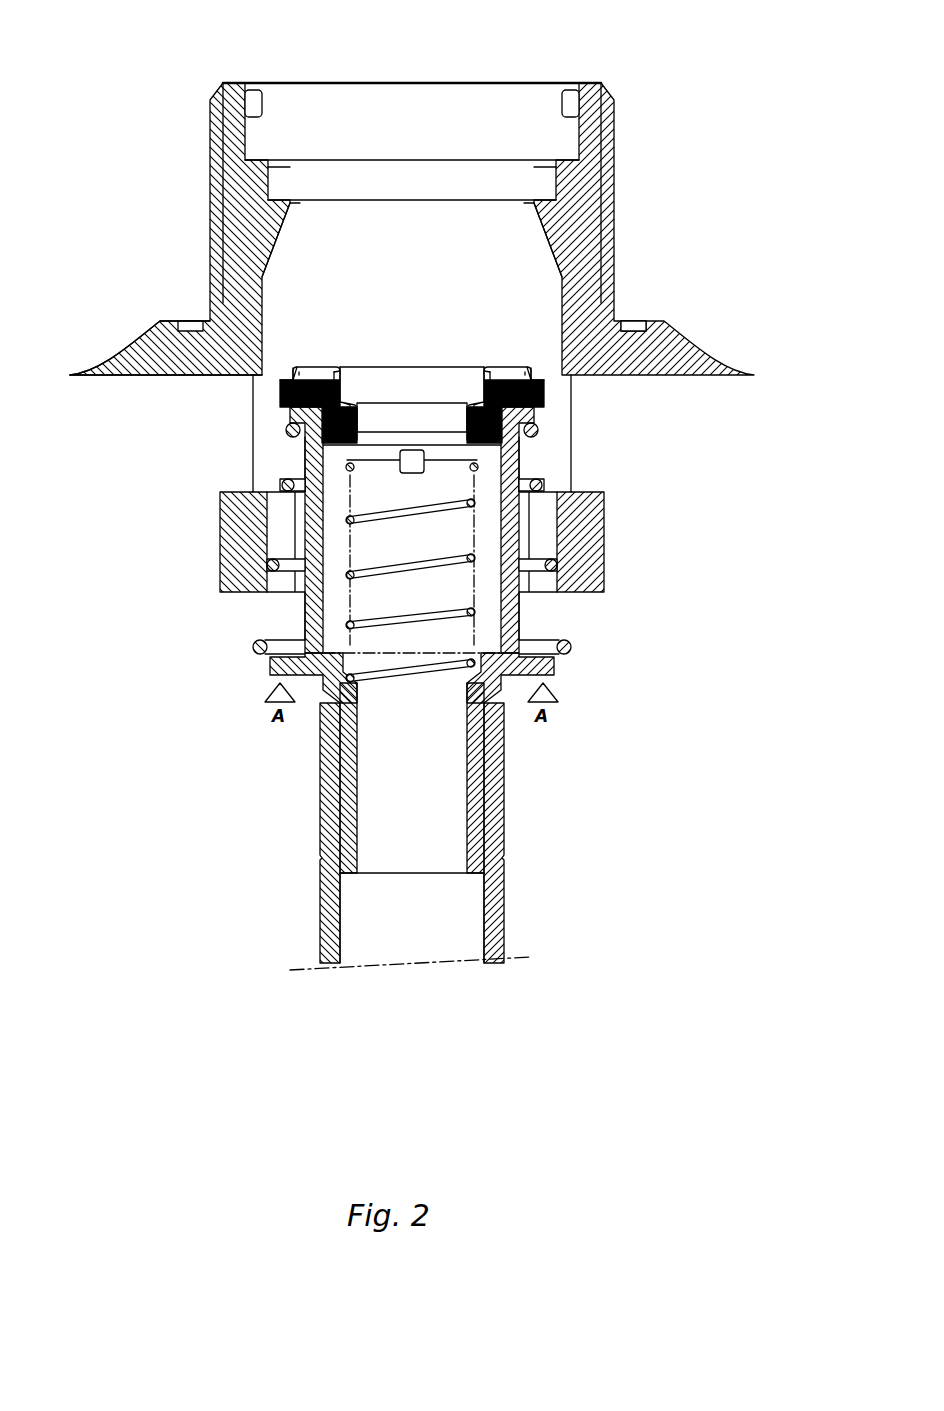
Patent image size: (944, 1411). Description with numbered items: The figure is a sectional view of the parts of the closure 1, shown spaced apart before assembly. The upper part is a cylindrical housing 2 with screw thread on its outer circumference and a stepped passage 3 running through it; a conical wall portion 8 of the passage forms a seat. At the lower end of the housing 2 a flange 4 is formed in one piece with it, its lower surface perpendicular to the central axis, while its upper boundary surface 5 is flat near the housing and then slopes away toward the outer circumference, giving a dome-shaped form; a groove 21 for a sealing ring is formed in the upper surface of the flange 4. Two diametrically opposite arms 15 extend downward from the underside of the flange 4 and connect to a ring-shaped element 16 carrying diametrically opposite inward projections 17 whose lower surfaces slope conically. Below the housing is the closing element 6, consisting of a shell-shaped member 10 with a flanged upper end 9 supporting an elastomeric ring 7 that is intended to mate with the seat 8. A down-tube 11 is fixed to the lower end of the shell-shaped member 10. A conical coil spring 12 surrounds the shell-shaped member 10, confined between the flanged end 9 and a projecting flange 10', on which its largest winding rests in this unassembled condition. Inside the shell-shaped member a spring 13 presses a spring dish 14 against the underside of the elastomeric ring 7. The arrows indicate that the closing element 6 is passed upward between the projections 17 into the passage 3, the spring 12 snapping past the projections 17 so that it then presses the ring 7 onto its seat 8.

The closure 1 is at (150, 848).
The cylindrical housing 2 is at (617, 155).
The stepped passage 3 is at (350, 100).
The flange 4 is at (120, 380).
The upper boundary surface 5 is at (138, 333).
The closing element 6 is at (522, 622).
The elastomeric ring 7 is at (545, 395).
The conical wall portion 8 is at (290, 207).
The flanged upper end 9 is at (287, 418).
The shell-shaped member 10 is at (369, 564).
The projecting flange 10' is at (376, 678).
The down-tube 11 is at (320, 935).
The coil spring 12 is at (568, 652).
The spring 13 is at (403, 620).
The spring dish 14 is at (378, 458).
The arms 15 is at (262, 463).
The ring-shaped element 16 is at (220, 547).
The projections 17 is at (267, 587).
The groove 21 is at (637, 318).